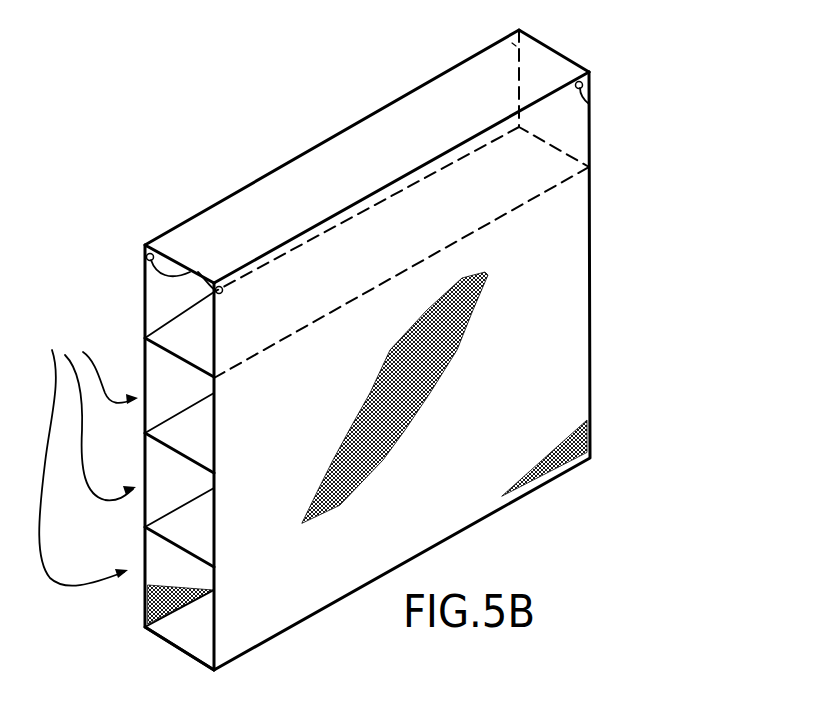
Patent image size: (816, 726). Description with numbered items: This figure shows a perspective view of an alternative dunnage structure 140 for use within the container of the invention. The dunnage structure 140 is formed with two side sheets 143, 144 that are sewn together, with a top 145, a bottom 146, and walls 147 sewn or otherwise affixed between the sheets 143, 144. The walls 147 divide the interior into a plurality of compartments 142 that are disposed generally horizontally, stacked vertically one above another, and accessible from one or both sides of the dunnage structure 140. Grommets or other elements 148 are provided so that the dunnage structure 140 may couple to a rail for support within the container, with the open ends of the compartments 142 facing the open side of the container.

The dunnage structure 140 is at (281, 146).
The compartments 142 is at (134, 342).
The side sheet 143 is at (575, 296).
The side sheet 144 is at (383, 101).
The top 145 is at (227, 222).
The bottom 146 is at (185, 633).
The walls 147 is at (190, 528).
The grommets 148 is at (200, 272).